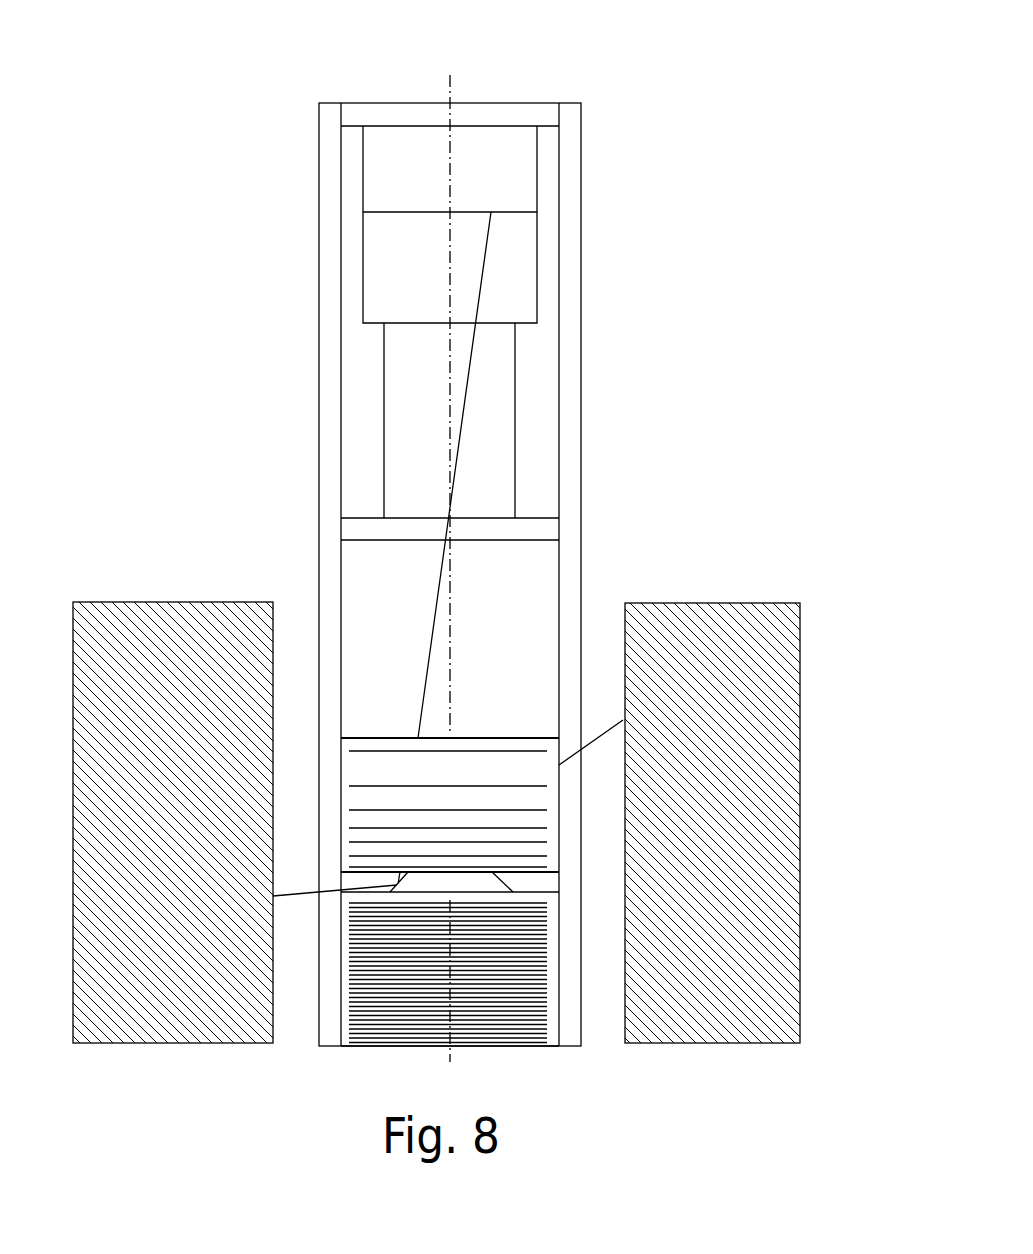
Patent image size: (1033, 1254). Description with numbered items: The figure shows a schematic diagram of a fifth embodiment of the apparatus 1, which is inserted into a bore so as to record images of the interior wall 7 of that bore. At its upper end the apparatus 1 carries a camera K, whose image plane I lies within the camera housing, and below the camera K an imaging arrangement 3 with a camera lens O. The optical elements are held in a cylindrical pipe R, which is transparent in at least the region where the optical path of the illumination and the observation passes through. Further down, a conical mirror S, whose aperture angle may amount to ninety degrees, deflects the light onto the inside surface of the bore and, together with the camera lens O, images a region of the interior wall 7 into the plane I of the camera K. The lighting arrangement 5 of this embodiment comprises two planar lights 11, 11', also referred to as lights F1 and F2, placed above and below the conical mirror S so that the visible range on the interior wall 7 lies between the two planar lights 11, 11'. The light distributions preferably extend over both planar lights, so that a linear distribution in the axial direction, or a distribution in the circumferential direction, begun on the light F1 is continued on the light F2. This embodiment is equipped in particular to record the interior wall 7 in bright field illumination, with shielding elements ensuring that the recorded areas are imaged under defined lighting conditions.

The apparatus 1 is at (607, 58).
The imaging arrangement 3 is at (515, 430).
The lighting arrangement 5 is at (480, 893).
The interior wall 7 is at (625, 617).
The planar light 11 is at (485, 796).
The planar light 11' is at (484, 1017).
The plane of the camera I is at (512, 212).
The camera K is at (539, 232).
The camera lens O is at (515, 390).
The cylindrical pipe R is at (319, 232).
The conical mirror S is at (505, 883).
The light F1 is at (559, 728).
The light F2 is at (559, 970).